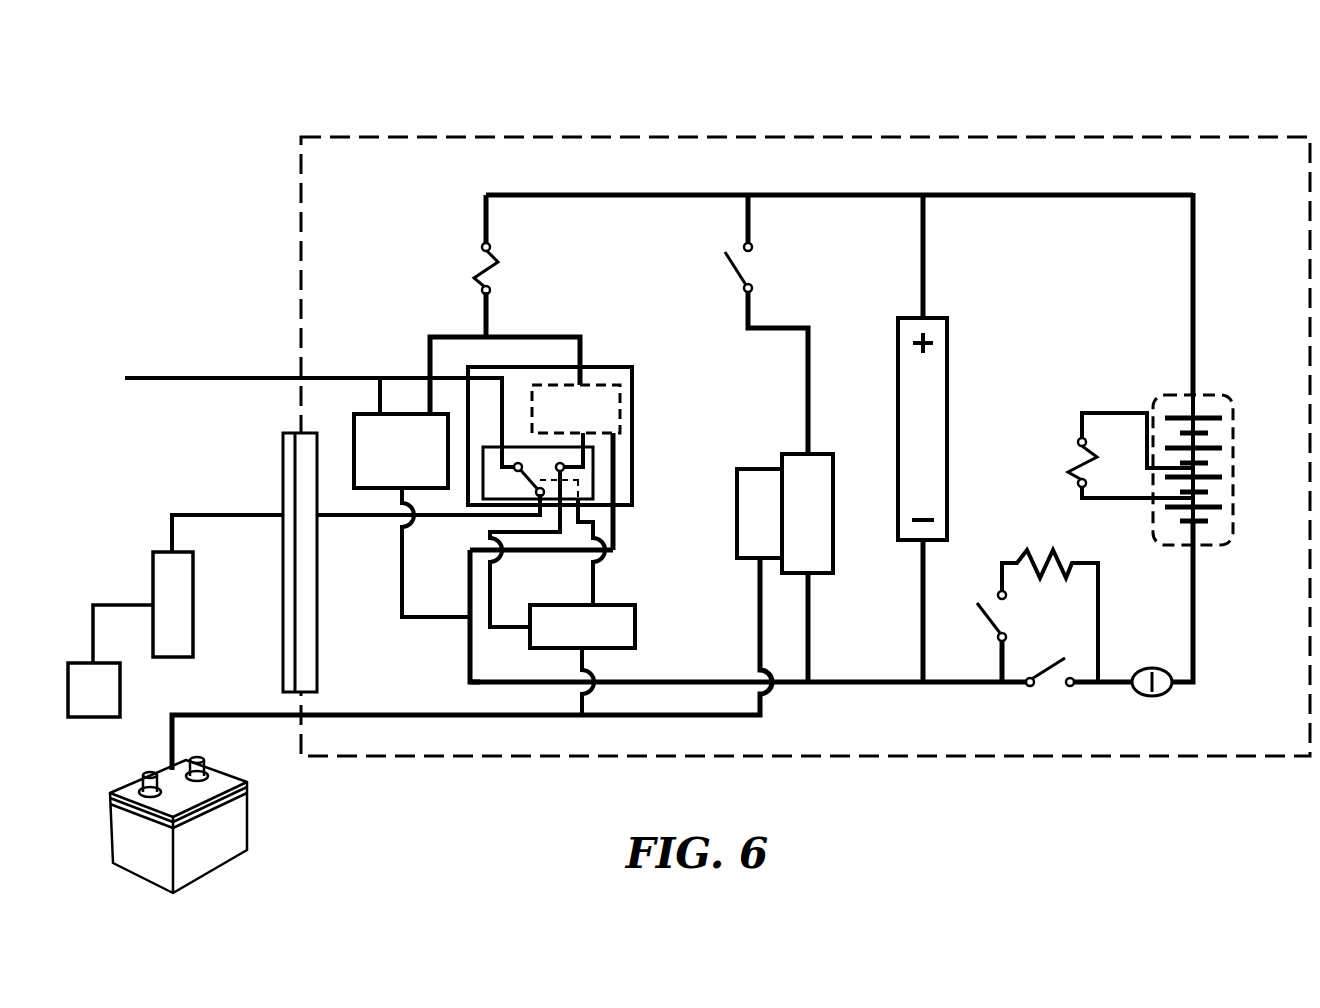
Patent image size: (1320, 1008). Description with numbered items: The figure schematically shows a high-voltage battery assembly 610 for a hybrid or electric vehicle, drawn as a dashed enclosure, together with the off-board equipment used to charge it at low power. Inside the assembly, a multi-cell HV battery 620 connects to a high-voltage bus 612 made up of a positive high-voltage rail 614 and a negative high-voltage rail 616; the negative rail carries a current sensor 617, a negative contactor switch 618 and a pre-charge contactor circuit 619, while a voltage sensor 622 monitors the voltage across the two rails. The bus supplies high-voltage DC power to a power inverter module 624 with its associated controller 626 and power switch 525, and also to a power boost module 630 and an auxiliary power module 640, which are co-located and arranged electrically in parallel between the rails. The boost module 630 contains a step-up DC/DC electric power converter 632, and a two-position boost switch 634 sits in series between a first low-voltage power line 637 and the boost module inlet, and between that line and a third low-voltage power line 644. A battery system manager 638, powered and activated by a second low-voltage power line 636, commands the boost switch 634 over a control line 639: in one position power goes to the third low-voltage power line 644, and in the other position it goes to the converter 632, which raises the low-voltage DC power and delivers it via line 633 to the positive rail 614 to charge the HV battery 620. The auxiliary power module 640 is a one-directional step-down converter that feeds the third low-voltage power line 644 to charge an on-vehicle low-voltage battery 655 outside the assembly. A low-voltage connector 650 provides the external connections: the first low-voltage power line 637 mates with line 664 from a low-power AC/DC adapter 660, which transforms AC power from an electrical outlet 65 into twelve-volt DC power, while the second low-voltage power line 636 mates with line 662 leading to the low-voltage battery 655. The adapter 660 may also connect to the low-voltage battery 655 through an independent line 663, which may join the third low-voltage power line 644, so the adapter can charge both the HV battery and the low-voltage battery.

The high-voltage battery assembly 610 is at (1085, 137).
The high-voltage bus 612 is at (1197, 262).
The positive high-voltage rail (HV+) 614 is at (1058, 197).
The negative high-voltage rail (HV−) 616 is at (855, 684).
The current sensor 617 is at (1162, 694).
The negative contactor switch 618 is at (1052, 688).
The pre-charge contactor circuit 619 is at (1037, 548).
The high-voltage energy storage device (HV battery) 620 is at (1216, 393).
The voltage sensor 622 is at (948, 410).
The power inverter module 624 is at (834, 540).
The controller 626 is at (758, 468).
The switch 525 is at (756, 268).
The power boost module 630 is at (615, 367).
The step-up DC/DC electric power converter 632 is at (576, 467).
The line 633 is at (528, 337).
The boost switch 634 is at (593, 473).
The second low-voltage power line 636 is at (433, 713).
The first low-voltage power line 637 is at (340, 518).
The battery system manager 638 is at (637, 625).
The control line 639 is at (583, 588).
The auxiliary power module 640 is at (402, 412).
The third low-voltage power line 644 is at (320, 377).
The independent line 663 is at (213, 377).
The line 664 is at (243, 513).
The low-power AC/DC adapter 660 is at (153, 565).
The line 662 is at (252, 713).
The low-voltage connector 650 is at (298, 695).
The on-vehicle low-voltage battery 655 is at (113, 833).
The electrical outlet 65 is at (110, 661).